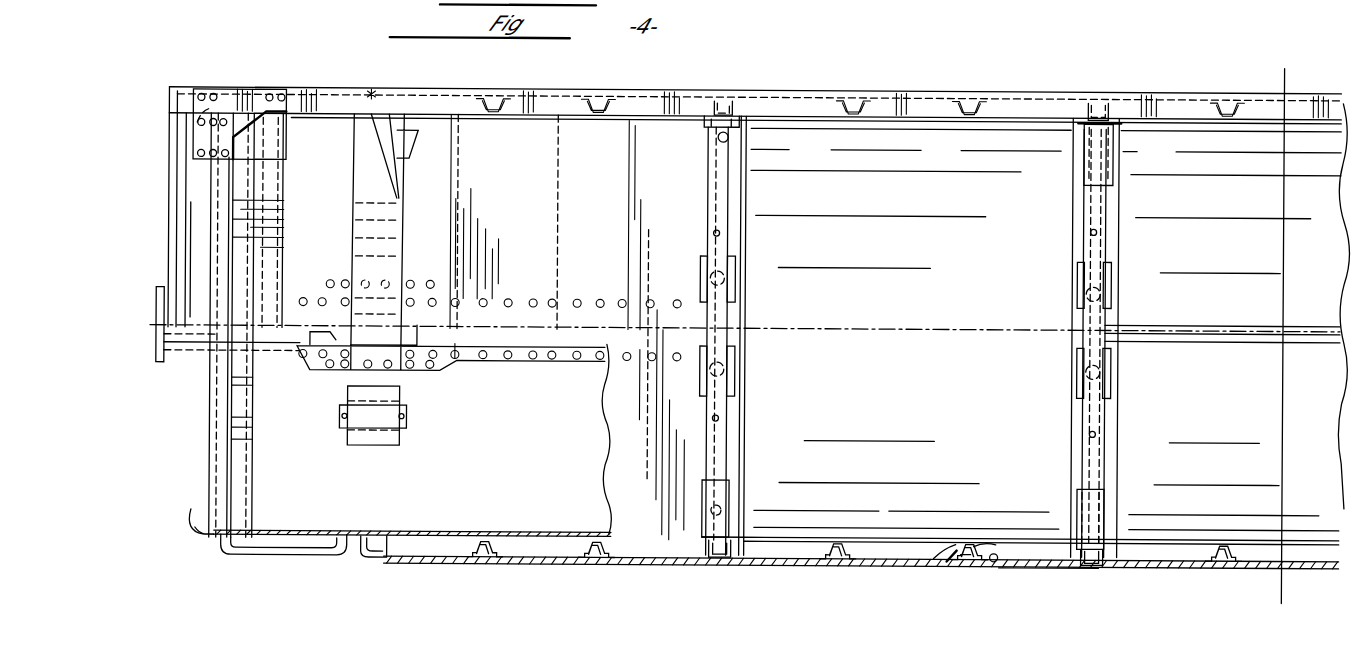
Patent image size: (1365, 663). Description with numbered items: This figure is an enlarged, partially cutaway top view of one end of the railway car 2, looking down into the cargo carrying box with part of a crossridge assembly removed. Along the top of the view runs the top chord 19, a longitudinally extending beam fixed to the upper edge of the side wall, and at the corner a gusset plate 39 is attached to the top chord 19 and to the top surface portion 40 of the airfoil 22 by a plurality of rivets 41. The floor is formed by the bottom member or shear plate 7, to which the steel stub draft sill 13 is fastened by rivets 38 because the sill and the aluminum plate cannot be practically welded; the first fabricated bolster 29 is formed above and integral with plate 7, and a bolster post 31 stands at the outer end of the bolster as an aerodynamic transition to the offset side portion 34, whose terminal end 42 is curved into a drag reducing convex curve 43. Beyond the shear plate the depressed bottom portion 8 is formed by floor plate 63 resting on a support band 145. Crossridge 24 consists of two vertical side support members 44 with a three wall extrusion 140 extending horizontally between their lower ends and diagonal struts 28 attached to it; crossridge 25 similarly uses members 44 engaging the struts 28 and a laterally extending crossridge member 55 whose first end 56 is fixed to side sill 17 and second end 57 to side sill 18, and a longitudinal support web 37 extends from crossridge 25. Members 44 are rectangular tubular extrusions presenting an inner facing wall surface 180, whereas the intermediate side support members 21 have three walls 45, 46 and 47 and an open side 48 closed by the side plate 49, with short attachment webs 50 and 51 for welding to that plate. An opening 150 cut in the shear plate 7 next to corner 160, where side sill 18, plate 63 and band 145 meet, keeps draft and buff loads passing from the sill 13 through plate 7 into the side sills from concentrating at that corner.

The car 2 is at (951, 90).
The bottom member 7 is at (638, 513).
The bottom portion 8 is at (881, 510).
The stub draft sill 13 is at (537, 360).
The side sill member 17 is at (749, 554).
The side sill member 18 is at (922, 119).
The top chord member 19 is at (623, 103).
The side support member 21 is at (822, 560).
The airfoil 22 is at (175, 230).
The crossridge 24 is at (745, 210).
The crossridge 25 is at (1072, 210).
The diagonal support strut 28 is at (744, 250).
The first fabricated bolster 29 is at (390, 220).
The bolster post 31 is at (370, 86).
The offset side portion 34 is at (262, 546).
The support web 37 is at (1178, 326).
The rivet 38 is at (622, 302).
The gusset plate 39 is at (228, 100).
The top surface portion 40 is at (183, 109).
The rivet 41 is at (268, 100).
The terminal end 42 is at (184, 518).
The convex curve 43 is at (194, 540).
The side support member 44 is at (722, 102).
The wall 45 is at (964, 558).
The wall 46 is at (971, 544).
The wall 47 is at (945, 550).
The open side 48 is at (966, 558).
The side plate 49 is at (1052, 566).
The attachment web 50 is at (959, 557).
The attachment web 51 is at (996, 561).
The crossridge member 55 is at (1097, 205).
The first end 56 is at (1094, 535).
The second end 57 is at (1105, 130).
The floor plate 63 is at (883, 147).
The three wall extrusion 140 is at (720, 213).
The support band 145 is at (740, 168).
The opening 150 is at (717, 140).
The corner 160 is at (749, 127).
The inner facing wall surface 180 is at (706, 537).